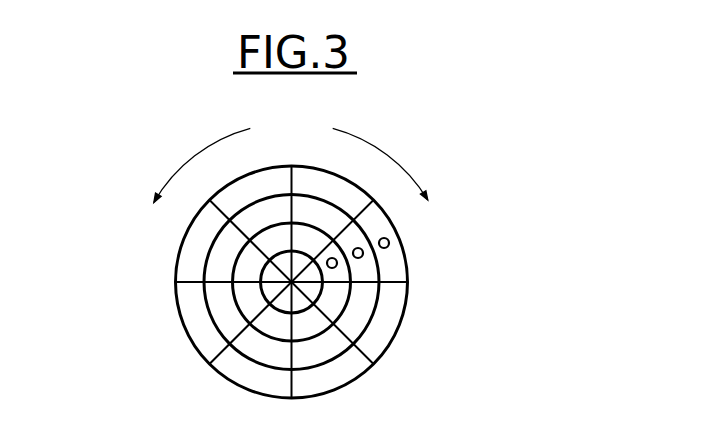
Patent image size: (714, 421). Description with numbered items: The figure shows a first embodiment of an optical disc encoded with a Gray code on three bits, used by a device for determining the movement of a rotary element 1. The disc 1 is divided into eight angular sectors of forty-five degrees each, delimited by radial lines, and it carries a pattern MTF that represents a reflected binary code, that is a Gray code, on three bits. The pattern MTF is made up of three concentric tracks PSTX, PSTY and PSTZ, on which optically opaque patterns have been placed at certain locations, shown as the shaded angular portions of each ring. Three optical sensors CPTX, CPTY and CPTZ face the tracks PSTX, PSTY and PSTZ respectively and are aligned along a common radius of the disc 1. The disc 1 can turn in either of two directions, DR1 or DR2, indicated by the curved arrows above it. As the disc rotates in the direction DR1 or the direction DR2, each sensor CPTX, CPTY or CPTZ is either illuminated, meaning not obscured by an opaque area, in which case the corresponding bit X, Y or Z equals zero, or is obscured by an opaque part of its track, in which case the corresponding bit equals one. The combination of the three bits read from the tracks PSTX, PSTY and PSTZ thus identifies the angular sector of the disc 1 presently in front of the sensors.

The rotary element 1 is at (295, 282).
The track PSTX is at (257, 265).
The track PSTY is at (351, 322).
The track PSTZ is at (373, 347).
The optical sensor CPTX is at (345, 272).
The optical sensor CPTY is at (369, 257).
The optical sensor CPTZ is at (393, 241).
The pattern MTF is at (213, 326).
The direction DR1 is at (202, 164).
The direction DR2 is at (380, 163).